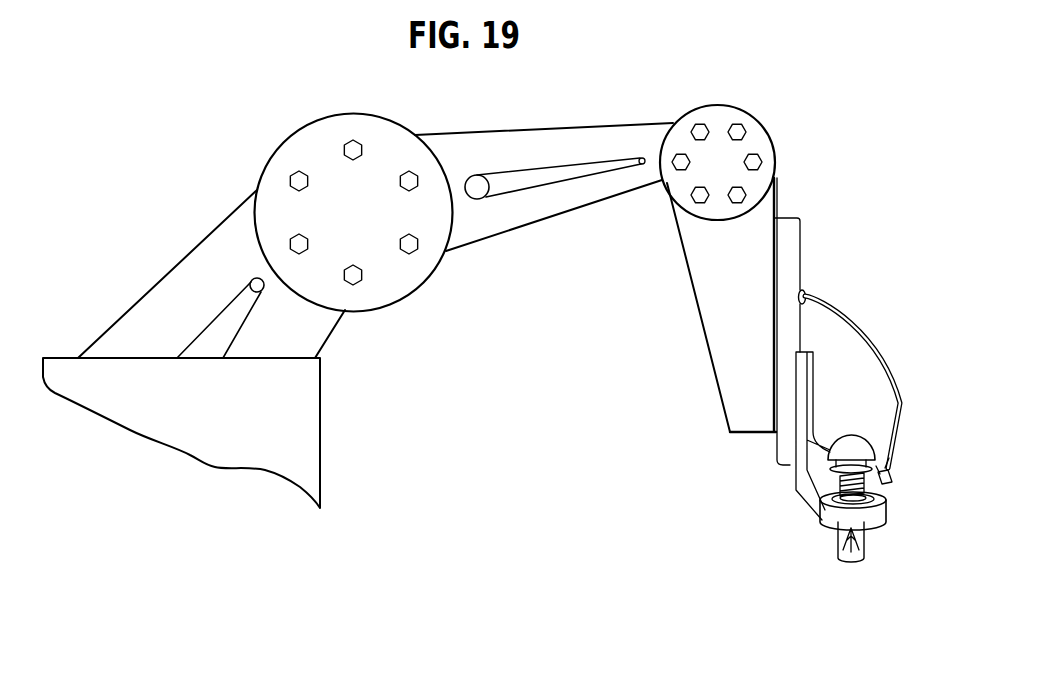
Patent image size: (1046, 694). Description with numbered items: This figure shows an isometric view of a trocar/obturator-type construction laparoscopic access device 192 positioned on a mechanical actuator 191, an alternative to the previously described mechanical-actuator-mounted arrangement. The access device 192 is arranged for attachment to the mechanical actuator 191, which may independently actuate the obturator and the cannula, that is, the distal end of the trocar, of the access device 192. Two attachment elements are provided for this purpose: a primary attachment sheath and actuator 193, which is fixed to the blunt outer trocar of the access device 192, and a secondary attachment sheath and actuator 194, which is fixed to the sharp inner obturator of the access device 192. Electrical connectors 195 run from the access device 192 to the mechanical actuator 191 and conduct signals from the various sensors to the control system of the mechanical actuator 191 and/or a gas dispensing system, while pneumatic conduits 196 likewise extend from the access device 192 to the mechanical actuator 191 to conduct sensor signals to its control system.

The mechanical actuator 191 is at (563, 242).
The trocar/obturator-type laparoscopic access device 192 is at (822, 479).
The primary attachment sheath and actuator 193 is at (892, 514).
The secondary attachment sheath and actuator 194 is at (850, 424).
The electrical connectors 195 is at (898, 478).
The pneumatic conduits 196 is at (900, 427).